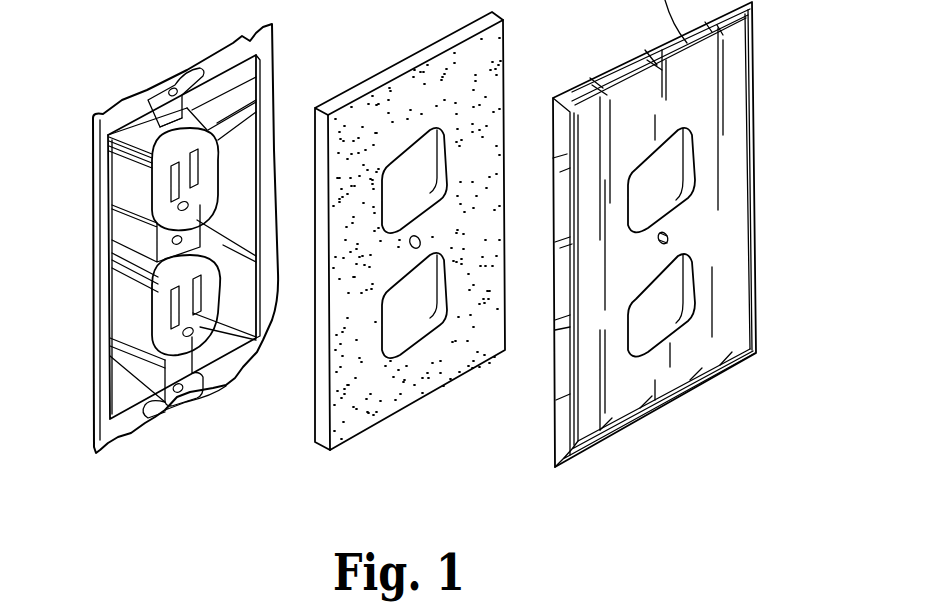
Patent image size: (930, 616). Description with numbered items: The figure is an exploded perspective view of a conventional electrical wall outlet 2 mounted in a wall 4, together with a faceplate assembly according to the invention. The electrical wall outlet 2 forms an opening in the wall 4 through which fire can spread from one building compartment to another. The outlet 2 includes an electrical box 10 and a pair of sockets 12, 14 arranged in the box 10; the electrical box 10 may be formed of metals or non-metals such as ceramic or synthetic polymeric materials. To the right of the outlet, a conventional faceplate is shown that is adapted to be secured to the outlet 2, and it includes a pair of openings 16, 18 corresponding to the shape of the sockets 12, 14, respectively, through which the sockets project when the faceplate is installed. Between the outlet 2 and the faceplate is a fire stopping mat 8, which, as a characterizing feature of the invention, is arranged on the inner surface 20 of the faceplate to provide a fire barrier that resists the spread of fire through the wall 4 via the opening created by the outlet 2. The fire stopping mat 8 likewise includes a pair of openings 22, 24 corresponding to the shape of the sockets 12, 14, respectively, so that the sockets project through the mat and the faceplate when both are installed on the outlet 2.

The electrical wall outlet 2 is at (182, 90).
The wall 4 is at (105, 122).
The fire stopping mat 8 is at (413, 73).
The electrical box 10 is at (132, 402).
The socket 12 is at (152, 193).
The socket 14 is at (152, 327).
The faceplate opening 16 is at (683, 147).
The faceplate opening 18 is at (687, 253).
The inner surface of the faceplate 20 is at (672, 373).
The fire stopping mat opening 22 is at (442, 138).
The fire stopping mat opening 24 is at (443, 256).